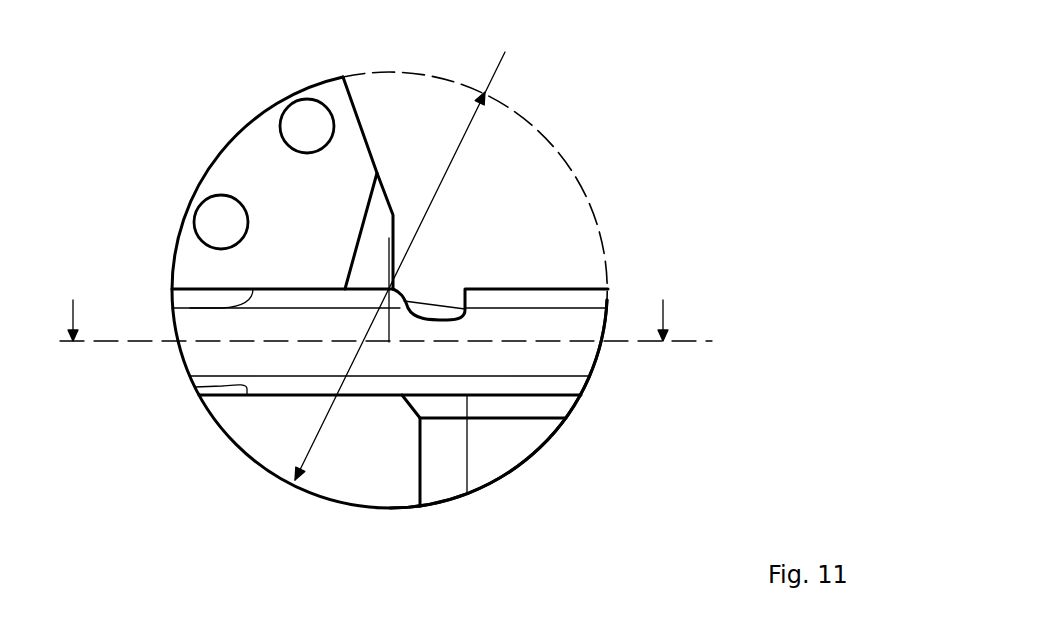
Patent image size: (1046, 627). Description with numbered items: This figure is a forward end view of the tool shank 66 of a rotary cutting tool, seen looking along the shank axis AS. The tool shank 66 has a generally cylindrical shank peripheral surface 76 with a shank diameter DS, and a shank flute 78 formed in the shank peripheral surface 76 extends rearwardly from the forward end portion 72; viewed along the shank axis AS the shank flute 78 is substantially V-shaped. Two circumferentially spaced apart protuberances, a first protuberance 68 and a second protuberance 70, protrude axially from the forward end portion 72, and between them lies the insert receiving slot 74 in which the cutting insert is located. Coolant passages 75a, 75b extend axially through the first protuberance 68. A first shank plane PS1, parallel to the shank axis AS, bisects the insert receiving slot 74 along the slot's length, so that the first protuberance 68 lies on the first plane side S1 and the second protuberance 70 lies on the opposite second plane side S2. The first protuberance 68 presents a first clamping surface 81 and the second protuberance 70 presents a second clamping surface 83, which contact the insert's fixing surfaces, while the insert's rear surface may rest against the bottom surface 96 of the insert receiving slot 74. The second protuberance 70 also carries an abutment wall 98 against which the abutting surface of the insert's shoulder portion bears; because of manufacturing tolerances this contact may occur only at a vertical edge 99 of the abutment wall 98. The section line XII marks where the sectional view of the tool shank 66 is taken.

The tool shank 66 is at (570, 88).
The first protuberance 68 is at (263, 160).
The second protuberance 70 is at (342, 470).
The forward end portion 72 is at (318, 267).
The insert receiving slot 74 is at (217, 327).
The coolant passage 75a is at (308, 126).
The coolant passage 75b is at (227, 230).
The shank peripheral surface 76 is at (377, 510).
The shank flute 78 is at (549, 214).
The first clamping surface 81 is at (190, 303).
The second clamping surface 83 is at (195, 387).
The bottom surface 96 is at (541, 357).
The abutment wall 98 is at (423, 462).
The vertical edge 99 is at (420, 419).
The shank axis AS is at (395, 289).
The shank diameter DS is at (414, 253).
The first shank plane PS1 is at (387, 338).
The section line XII is at (373, 306).
The first plane side S1 is at (729, 298).
The second plane side S2 is at (729, 374).